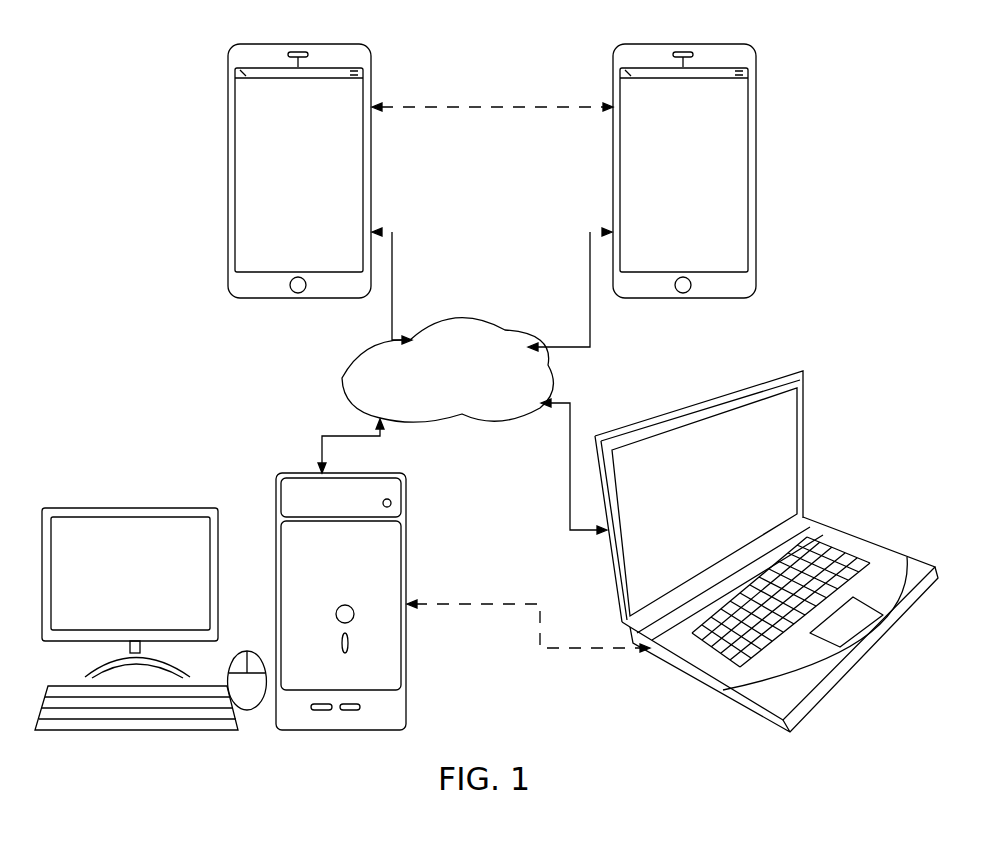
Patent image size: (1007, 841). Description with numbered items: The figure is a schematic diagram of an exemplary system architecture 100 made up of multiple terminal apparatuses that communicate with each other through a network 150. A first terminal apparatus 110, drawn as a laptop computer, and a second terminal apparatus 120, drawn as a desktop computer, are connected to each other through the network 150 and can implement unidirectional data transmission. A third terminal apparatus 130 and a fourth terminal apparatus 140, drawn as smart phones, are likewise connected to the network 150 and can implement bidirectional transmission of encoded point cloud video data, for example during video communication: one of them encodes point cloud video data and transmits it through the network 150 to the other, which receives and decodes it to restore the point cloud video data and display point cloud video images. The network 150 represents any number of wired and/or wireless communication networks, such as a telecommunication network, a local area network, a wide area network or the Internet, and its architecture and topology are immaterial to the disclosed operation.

The system architecture 100 is at (858, 36).
The first terminal apparatus 110 is at (803, 430).
The second terminal apparatus 120 is at (403, 558).
The third terminal apparatus 130 is at (228, 188).
The fourth terminal apparatus 140 is at (757, 205).
The network 150 is at (447, 370).